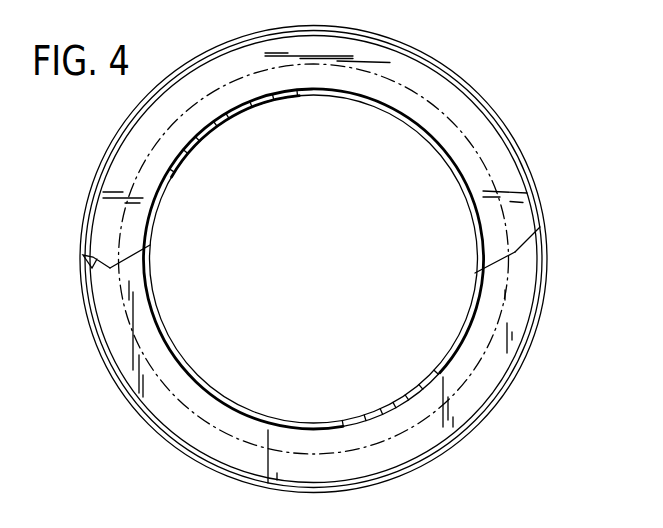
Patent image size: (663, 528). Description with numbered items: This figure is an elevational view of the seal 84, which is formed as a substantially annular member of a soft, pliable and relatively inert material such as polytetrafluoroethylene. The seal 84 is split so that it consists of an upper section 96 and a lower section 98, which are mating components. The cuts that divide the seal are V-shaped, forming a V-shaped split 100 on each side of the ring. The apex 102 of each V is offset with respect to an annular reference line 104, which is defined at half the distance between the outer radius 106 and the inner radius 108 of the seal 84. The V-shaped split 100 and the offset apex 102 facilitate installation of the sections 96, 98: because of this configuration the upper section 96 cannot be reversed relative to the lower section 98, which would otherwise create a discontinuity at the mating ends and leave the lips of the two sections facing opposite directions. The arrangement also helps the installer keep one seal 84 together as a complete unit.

The seal 84 is at (490, 88).
The upper section 96 is at (417, 50).
The lower section 98 is at (178, 452).
The V-shaped split 100 is at (110, 268).
The apex 102 is at (110, 268).
The annular reference line 104 is at (483, 362).
The outer radius 106 is at (497, 403).
The inner radius 108 is at (457, 340).